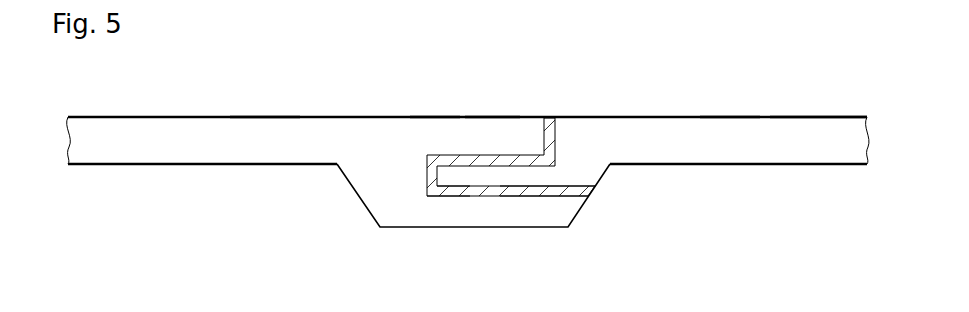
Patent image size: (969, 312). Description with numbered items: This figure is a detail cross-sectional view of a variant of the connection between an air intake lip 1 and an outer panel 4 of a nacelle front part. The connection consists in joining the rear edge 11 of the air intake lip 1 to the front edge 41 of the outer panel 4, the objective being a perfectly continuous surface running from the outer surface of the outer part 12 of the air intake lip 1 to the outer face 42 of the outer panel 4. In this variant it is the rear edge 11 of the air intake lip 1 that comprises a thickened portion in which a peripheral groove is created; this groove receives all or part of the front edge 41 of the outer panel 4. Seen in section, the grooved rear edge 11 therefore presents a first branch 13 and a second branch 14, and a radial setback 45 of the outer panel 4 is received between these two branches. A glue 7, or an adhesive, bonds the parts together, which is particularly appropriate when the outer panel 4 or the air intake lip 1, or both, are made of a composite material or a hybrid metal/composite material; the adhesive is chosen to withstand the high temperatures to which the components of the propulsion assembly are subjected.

The air intake lip 1 is at (168, 126).
The outer part 12 is at (262, 118).
The rear edge 11 is at (435, 130).
The first branch 13 is at (480, 126).
The glue 7 is at (555, 127).
The outer face 42 is at (720, 118).
The outer panel 4 is at (803, 130).
The radial setback 45 is at (450, 177).
The second branch 14 is at (490, 207).
The front edge 41 is at (536, 177).